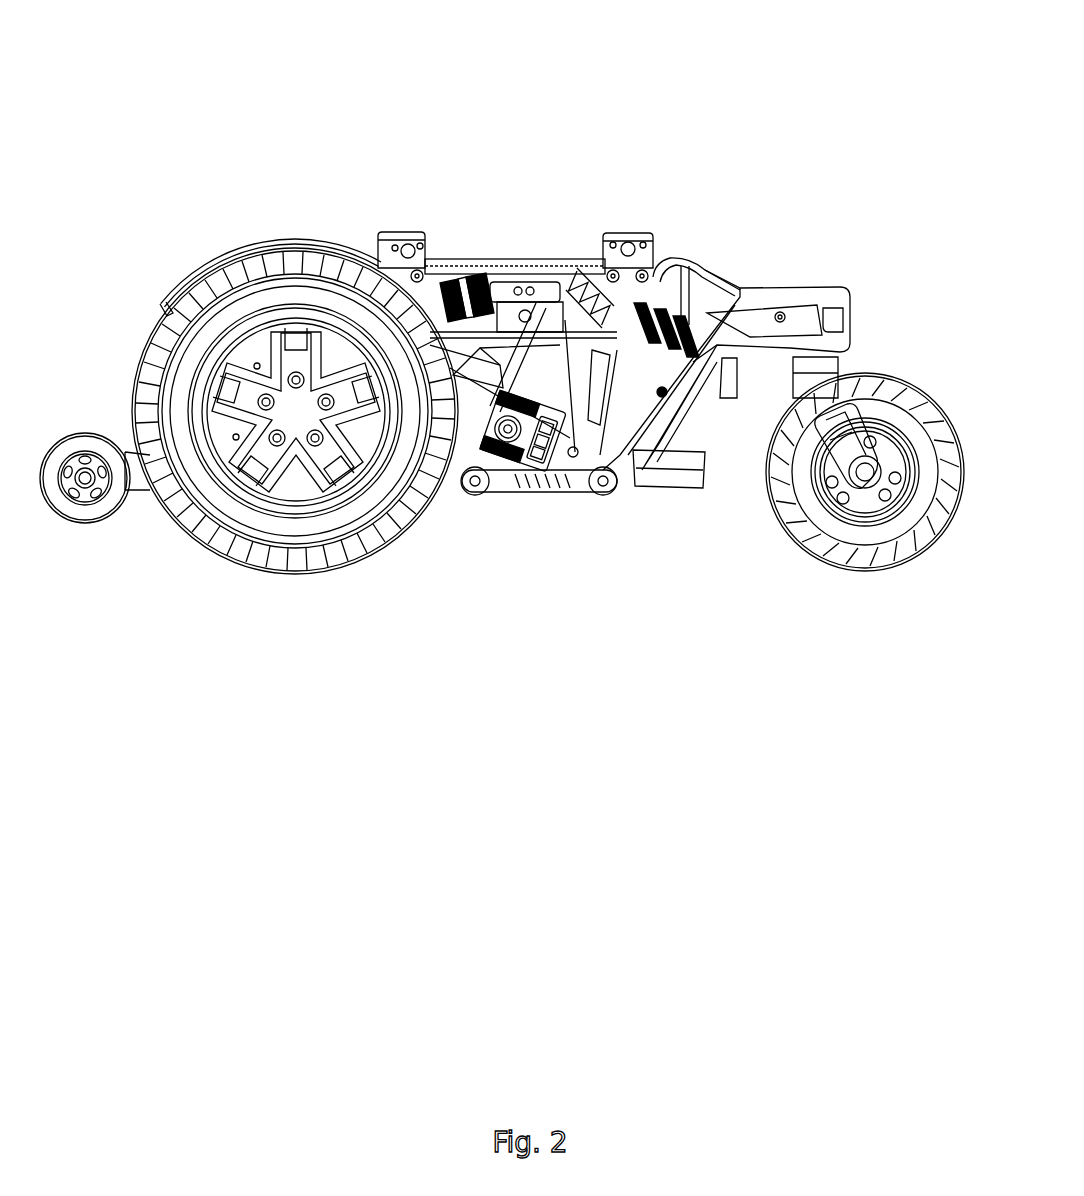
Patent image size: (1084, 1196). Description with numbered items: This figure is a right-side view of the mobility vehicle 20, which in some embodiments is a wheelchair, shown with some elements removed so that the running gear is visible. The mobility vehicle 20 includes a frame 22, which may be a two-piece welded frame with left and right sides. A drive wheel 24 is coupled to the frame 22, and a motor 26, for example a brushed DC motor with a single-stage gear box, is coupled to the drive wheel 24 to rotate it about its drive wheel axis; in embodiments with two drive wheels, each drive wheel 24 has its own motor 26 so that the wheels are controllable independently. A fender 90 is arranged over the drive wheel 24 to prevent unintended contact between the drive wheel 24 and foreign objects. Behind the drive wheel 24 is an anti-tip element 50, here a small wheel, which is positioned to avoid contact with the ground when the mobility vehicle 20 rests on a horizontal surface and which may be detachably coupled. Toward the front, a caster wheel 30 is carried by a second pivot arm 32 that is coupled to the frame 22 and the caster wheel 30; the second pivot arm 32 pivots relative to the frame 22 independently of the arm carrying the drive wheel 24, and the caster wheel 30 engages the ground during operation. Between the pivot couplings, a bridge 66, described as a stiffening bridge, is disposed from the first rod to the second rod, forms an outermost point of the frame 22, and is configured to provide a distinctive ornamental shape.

The mobility vehicle 20 is at (410, 162).
The frame 22 is at (622, 482).
The drive wheel 24 is at (277, 527).
The motor 26 is at (478, 430).
The caster wheel 30 is at (820, 518).
The second pivot arm 32 is at (663, 397).
The anti-tip element 50 is at (87, 500).
The bridge 66 is at (565, 494).
The fender 90 is at (220, 263).